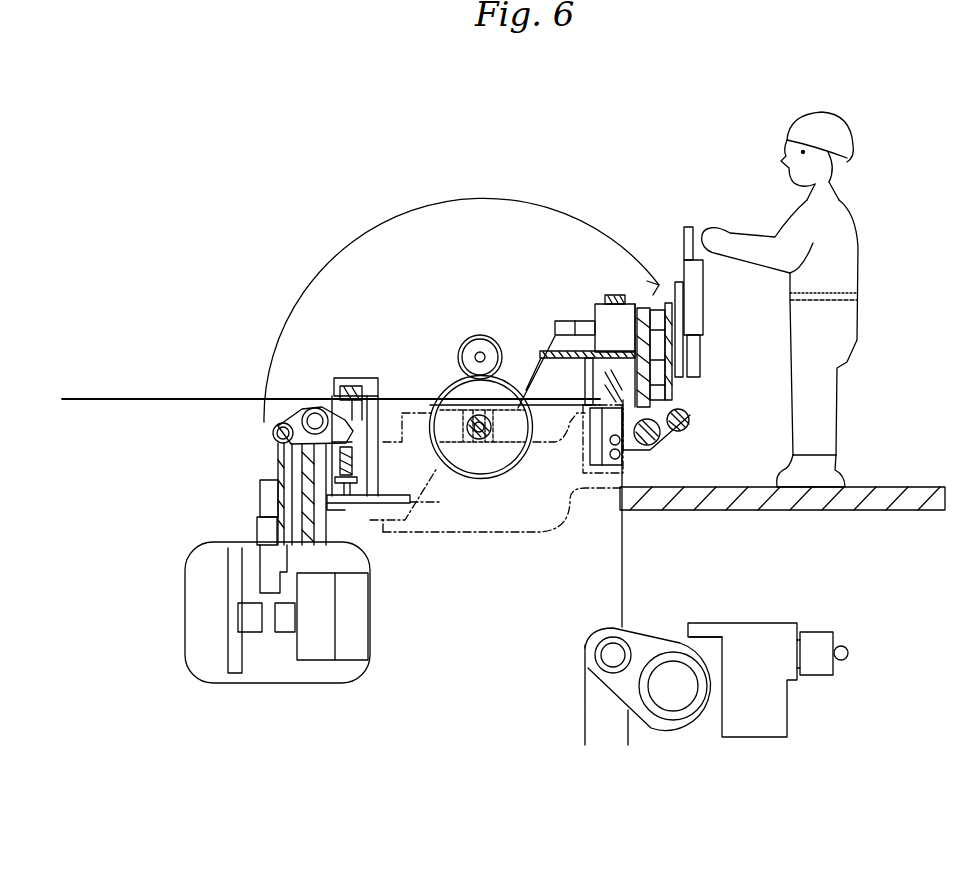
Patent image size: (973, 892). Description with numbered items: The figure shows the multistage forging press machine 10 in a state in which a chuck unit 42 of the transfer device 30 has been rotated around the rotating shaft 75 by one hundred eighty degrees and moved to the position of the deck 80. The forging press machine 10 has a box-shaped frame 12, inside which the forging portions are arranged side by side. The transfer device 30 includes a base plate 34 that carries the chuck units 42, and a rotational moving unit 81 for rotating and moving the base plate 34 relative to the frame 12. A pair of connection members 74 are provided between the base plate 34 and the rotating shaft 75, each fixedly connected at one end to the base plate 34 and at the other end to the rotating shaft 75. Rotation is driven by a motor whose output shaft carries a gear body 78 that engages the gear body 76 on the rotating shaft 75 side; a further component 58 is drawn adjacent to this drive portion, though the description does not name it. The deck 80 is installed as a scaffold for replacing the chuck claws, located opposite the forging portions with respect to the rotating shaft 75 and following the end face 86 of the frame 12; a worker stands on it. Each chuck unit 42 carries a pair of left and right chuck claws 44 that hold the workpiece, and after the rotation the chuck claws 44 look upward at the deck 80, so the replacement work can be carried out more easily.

The multistage forging press machine 10 is at (180, 247).
The frame 12 is at (176, 425).
The transfer device 30 is at (633, 228).
The base plate 34 is at (683, 387).
The chuck unit 42 is at (237, 543).
The chuck claw 44 is at (690, 226).
The motor block 58 is at (594, 304).
The connection member 74 is at (522, 382).
The rotating shaft 75 is at (481, 447).
The gear body 76 is at (505, 465).
The gear body 78 is at (478, 333).
The deck 80 is at (905, 487).
The rotational moving unit 81 is at (487, 300).
The end face 86 is at (623, 543).